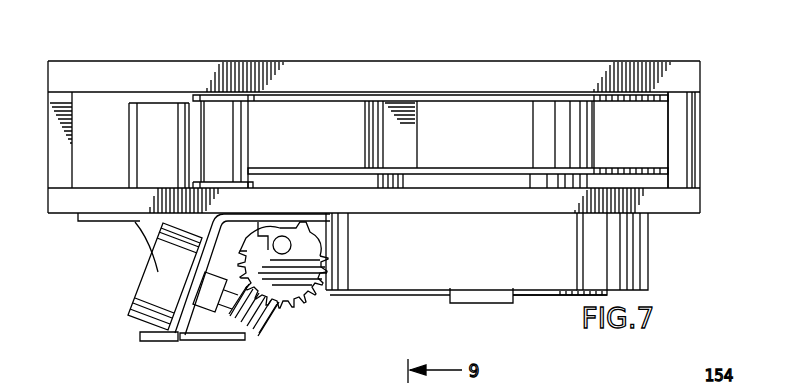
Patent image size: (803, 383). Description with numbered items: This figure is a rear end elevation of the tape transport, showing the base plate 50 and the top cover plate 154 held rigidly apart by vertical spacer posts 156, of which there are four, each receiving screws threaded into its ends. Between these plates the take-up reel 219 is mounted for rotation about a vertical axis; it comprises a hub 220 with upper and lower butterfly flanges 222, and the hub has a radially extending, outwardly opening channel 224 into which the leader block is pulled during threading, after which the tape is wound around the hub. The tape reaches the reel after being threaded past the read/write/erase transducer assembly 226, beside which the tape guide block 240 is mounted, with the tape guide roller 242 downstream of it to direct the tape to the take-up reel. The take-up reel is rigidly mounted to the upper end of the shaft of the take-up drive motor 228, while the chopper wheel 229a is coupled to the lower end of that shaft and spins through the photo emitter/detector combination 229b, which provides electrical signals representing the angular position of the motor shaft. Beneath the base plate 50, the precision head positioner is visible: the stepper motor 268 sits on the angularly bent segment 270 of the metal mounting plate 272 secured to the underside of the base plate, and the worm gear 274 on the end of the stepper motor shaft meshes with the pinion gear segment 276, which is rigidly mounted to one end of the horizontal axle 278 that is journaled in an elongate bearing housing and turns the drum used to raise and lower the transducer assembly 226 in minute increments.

The base plate 50 is at (662, 203).
The top cover plate 154 is at (622, 62).
The vertical spacer posts 156 is at (684, 145).
The take-up reel 219 is at (523, 96).
The hub 220 is at (437, 106).
The butterfly flanges 222 is at (621, 104).
The channel 224 is at (388, 131).
The read/write/erase transducer assembly 226 is at (136, 153).
The take-up drive motor 228 is at (648, 252).
The chopper wheel 229a is at (538, 298).
The photo emitter/detector combination 229b is at (455, 303).
The tape guide block 240 is at (148, 104).
The tape guide roller 242 is at (229, 139).
The stepper motor 268 is at (140, 307).
The angularly bent segment 270 is at (160, 290).
The mounting plate 272 is at (118, 218).
The worm gear 274 is at (255, 333).
The pinion gear segment 276 is at (327, 270).
The horizontal axle 278 is at (282, 244).